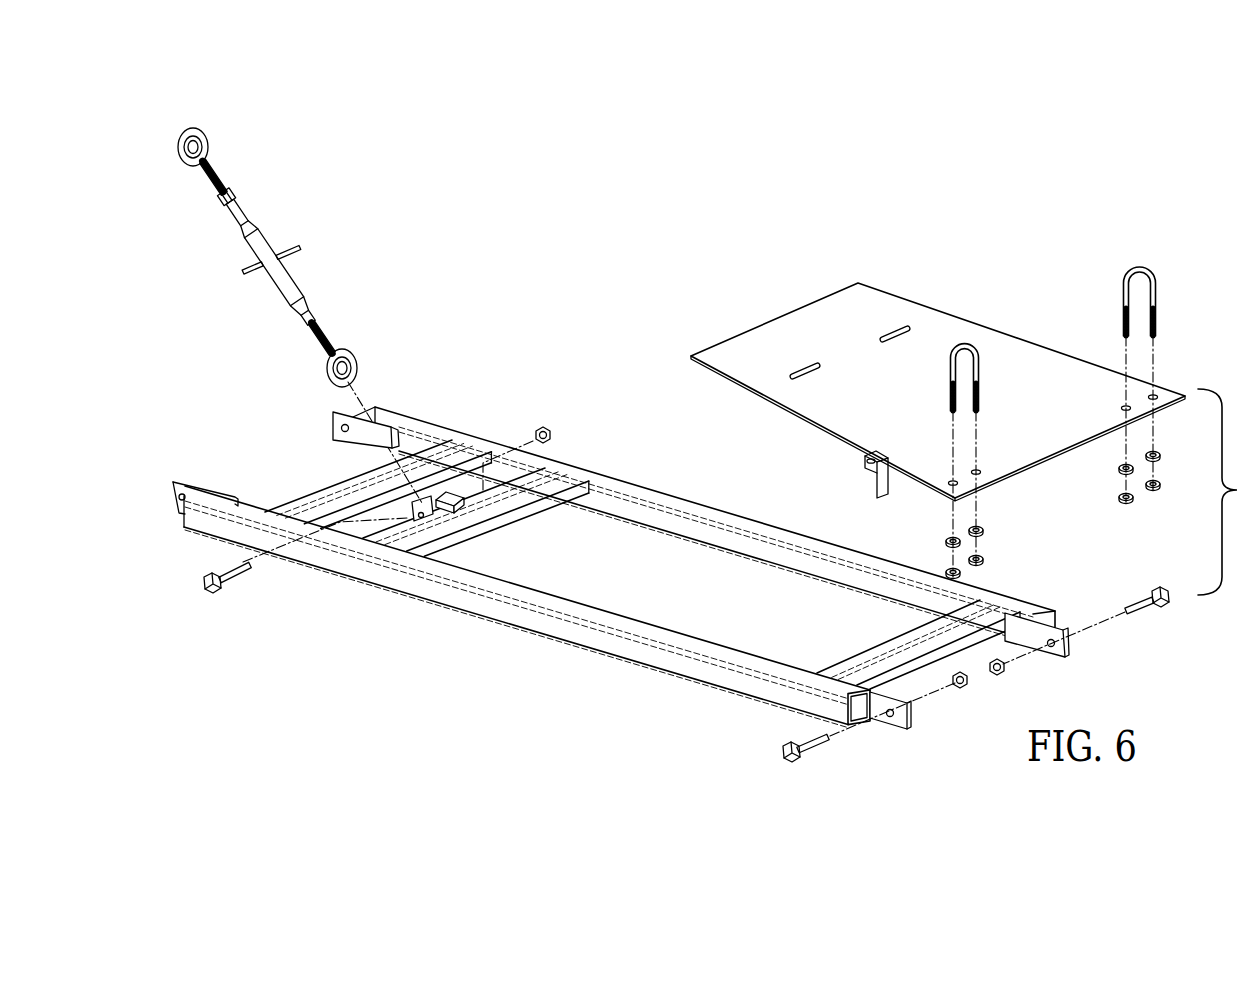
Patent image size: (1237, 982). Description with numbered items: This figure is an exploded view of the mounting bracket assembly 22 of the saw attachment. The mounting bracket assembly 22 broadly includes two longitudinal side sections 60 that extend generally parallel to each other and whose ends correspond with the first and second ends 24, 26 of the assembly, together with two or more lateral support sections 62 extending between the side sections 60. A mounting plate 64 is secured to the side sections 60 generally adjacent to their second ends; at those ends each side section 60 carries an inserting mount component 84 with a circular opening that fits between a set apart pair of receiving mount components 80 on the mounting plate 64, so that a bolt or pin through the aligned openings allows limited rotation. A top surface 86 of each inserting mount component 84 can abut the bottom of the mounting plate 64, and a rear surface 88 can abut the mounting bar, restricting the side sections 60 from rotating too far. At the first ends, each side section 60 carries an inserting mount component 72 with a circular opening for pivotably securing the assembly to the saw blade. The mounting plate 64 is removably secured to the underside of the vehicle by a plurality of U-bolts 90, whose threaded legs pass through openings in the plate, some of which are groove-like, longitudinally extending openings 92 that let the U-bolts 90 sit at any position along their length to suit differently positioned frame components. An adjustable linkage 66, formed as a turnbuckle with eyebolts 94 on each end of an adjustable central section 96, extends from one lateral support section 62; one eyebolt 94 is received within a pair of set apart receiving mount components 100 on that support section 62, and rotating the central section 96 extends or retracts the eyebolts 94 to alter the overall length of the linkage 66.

The mounting bracket assembly 22 is at (619, 558).
The first end 24 is at (198, 560).
The second end 26 is at (976, 702).
The longitudinal side section 60 is at (684, 500).
The lateral support section 62 is at (325, 487).
The mounting plate 64 is at (938, 381).
The adjustable linkage 66 is at (294, 252).
The inserting mount component 72 is at (333, 426).
The receiving mount component 80 is at (864, 470).
The inserting mount component 84 is at (886, 727).
The top surface 86 is at (910, 688).
The rear surface 88 is at (905, 713).
The U-bolt 90 is at (973, 343).
The groove-like opening 92 is at (903, 331).
The eyebolt 94 is at (210, 143).
The adjustable central section 96 is at (286, 268).
The receiving mount component 100 is at (458, 490).